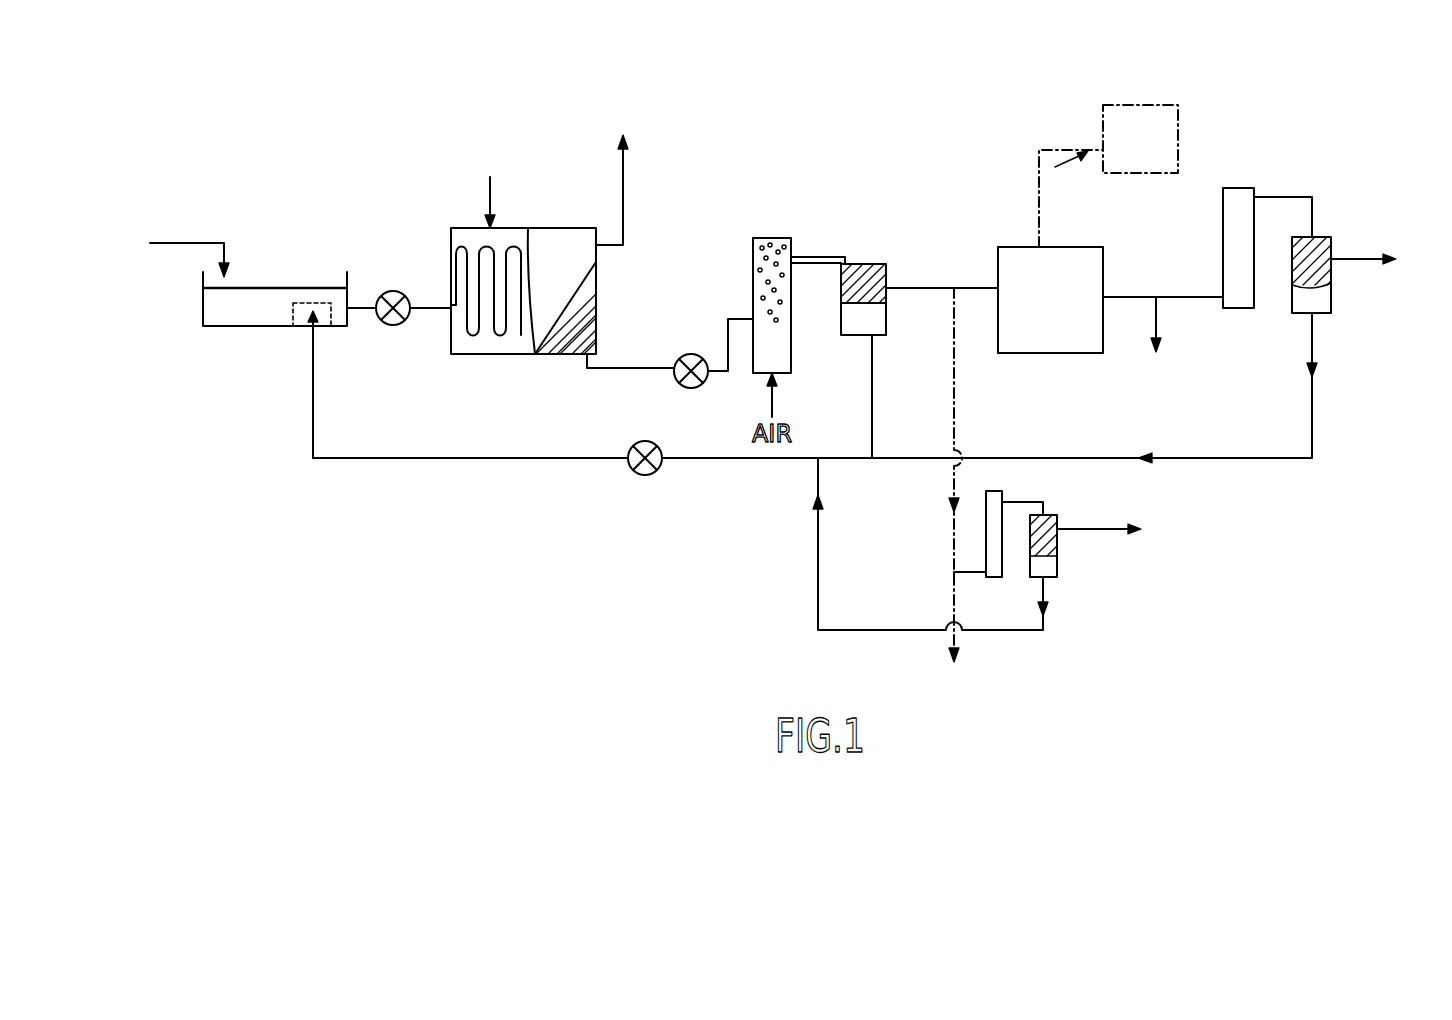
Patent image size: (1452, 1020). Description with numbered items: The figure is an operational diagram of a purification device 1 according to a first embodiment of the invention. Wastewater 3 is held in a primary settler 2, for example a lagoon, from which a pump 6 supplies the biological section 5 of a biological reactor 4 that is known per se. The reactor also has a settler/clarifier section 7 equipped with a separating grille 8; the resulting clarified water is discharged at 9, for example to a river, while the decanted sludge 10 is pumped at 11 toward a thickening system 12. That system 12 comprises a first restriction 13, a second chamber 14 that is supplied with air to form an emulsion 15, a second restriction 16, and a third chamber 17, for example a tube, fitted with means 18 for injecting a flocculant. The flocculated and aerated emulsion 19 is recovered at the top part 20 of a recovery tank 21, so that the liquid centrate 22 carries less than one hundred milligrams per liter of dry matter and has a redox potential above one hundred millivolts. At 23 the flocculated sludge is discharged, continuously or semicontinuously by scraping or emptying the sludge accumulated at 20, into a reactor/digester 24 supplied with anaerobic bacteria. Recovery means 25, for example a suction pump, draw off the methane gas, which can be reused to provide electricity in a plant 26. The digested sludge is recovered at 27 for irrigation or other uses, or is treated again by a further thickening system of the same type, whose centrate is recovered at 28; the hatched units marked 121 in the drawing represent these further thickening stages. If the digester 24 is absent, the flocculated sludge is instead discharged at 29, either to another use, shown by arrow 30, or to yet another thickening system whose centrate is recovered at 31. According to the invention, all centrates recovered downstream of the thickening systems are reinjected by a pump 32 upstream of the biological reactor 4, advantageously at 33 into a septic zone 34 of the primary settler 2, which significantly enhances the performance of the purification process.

The purification device 1 is at (764, 94).
The primary settler 2 is at (230, 328).
The wastewater 3 is at (265, 305).
The biological reactor 4 is at (527, 262).
The biological section 5 is at (451, 240).
The pump 6 is at (393, 326).
The settler/clarifier section 7 is at (607, 265).
The separating grille 8 is at (598, 320).
The water discharge 9 is at (627, 195).
The decanted sludge 10 is at (557, 349).
The sludge pump 11 is at (691, 354).
The thickening system 12 is at (786, 230).
The first restriction 13 is at (753, 300).
The second chamber 14 is at (780, 320).
The emulsion 15 is at (761, 240).
The second restriction 16 is at (798, 250).
The third chamber 17 is at (830, 257).
The flocculant injection means 18 is at (815, 250).
The flocculated aerated emulsion 19 is at (875, 280).
The top part 20 is at (891, 272).
The recovery tank 21 is at (887, 303).
The liquid centrate 22 is at (862, 335).
The flocculated sludge discharge 23 is at (968, 288).
The reactor/digester 24 is at (1103, 262).
The recovery means 25 is at (1039, 210).
The plant 26 is at (1142, 105).
The digested sludge recovery 27 is at (1156, 318).
The centrate recovery 28 is at (1312, 340).
The flocculated sludge discharge 29 is at (958, 420).
The other use arrow 30 is at (954, 590).
The centrate recovery 31 is at (1043, 590).
The pump 32 is at (648, 476).
The reinjection point 33 is at (310, 330).
The septic zone 34 is at (320, 303).
The membrane unit 121 is at (1331, 218).